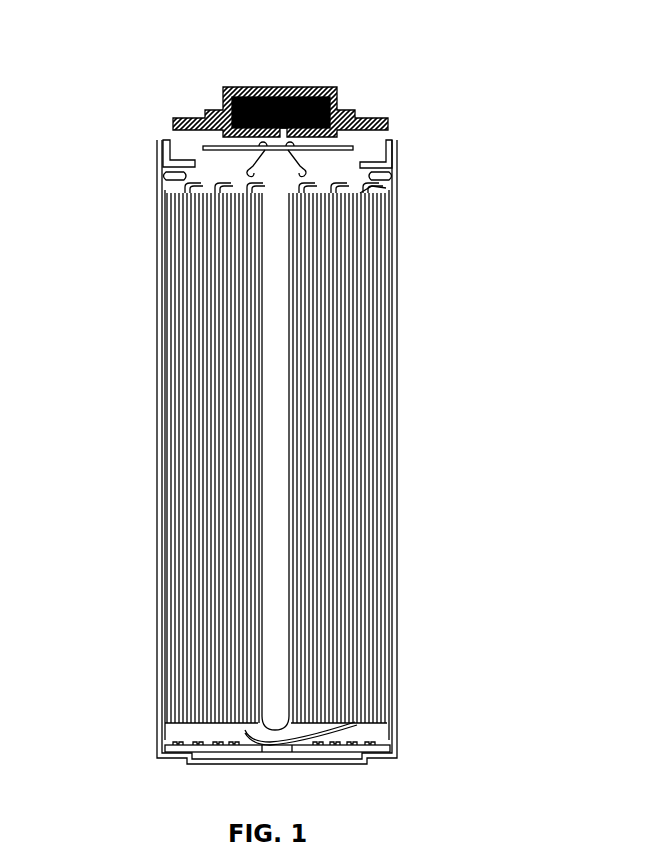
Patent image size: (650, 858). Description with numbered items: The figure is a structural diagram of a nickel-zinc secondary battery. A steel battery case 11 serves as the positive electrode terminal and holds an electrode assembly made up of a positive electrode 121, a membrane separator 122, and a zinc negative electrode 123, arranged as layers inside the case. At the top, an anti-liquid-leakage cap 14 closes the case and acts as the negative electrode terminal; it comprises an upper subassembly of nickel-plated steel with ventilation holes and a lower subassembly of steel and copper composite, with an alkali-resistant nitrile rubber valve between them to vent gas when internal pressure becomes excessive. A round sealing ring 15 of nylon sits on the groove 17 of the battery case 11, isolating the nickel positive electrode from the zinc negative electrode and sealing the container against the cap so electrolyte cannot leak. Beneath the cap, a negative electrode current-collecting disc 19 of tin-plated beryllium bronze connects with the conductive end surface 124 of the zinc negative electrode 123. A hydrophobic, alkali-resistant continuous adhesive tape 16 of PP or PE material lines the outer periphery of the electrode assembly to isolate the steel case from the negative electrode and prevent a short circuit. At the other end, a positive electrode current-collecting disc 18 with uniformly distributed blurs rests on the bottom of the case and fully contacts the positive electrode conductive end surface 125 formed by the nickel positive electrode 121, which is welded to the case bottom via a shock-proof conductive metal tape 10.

The shock-proof conductive metal tape 10 is at (157, 728).
The battery case 11 is at (399, 311).
The anti-liquid-leakage cap 14 is at (288, 86).
The round sealing ring 15 is at (397, 162).
The continuous adhesive tape 16 is at (398, 391).
The groove of the battery case 17 is at (176, 177).
The positive electrode current-collecting disc 18 is at (357, 742).
The negative electrode current-collecting disc 19 is at (341, 146).
The positive electrode 121 is at (195, 255).
The membrane separator 122 is at (354, 499).
The zinc negative electrode 123 is at (180, 240).
The conductive end surface of the zinc negative electrode 124 is at (372, 193).
The positive electrode conductive end surface 125 is at (349, 727).